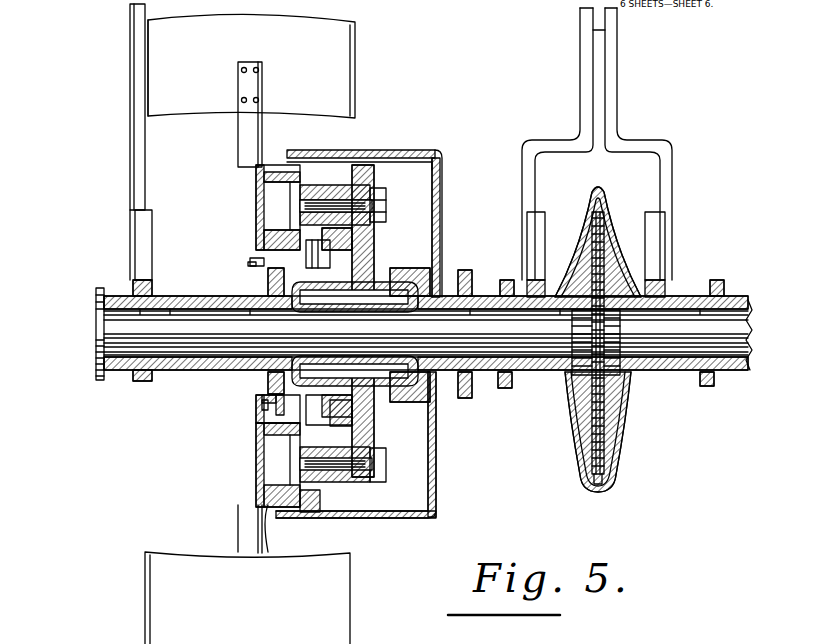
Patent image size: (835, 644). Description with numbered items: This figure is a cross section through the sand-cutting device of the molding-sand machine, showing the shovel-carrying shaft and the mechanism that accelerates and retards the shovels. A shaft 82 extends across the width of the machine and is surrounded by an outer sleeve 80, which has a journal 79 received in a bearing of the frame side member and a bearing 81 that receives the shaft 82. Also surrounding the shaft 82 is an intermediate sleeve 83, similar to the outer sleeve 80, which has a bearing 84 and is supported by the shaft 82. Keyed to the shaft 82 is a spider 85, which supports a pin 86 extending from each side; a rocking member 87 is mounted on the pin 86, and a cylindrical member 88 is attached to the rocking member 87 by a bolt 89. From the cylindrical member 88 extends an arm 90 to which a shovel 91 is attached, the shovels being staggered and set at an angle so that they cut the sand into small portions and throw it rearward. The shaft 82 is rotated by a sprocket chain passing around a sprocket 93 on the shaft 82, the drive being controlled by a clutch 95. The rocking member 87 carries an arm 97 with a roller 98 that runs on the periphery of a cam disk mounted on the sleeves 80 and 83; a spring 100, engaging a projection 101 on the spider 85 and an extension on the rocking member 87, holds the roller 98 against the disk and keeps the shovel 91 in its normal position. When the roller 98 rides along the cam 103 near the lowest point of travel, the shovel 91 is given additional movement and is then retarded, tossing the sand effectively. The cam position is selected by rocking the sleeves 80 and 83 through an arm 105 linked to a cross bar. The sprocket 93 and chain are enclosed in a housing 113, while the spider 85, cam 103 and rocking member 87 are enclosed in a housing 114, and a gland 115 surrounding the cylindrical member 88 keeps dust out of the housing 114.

The journal 79 is at (118, 382).
The outer sleeve 80 is at (210, 296).
The bearing 81 is at (128, 382).
The shaft 82 is at (228, 328).
The intermediate sleeve 83 is at (508, 390).
The bearing 84 is at (463, 398).
The spider 85 is at (356, 418).
The pin 86 is at (300, 200).
The rocking member 87 is at (325, 490).
The cylindrical member 88 is at (256, 168).
The bolt 89 is at (256, 493).
The arm 90 is at (243, 135).
The shovel 91 is at (250, 329).
The sprocket 93 is at (605, 460).
The clutch 95 is at (312, 282).
The arm 97 is at (258, 435).
The roller 98 is at (370, 440).
The spring 100 is at (257, 258).
The projection 101 is at (333, 257).
The cam 103 is at (264, 398).
The arm 105 is at (133, 163).
The housing 113 is at (625, 250).
The housing 114 is at (437, 500).
The gland 115 is at (268, 505).